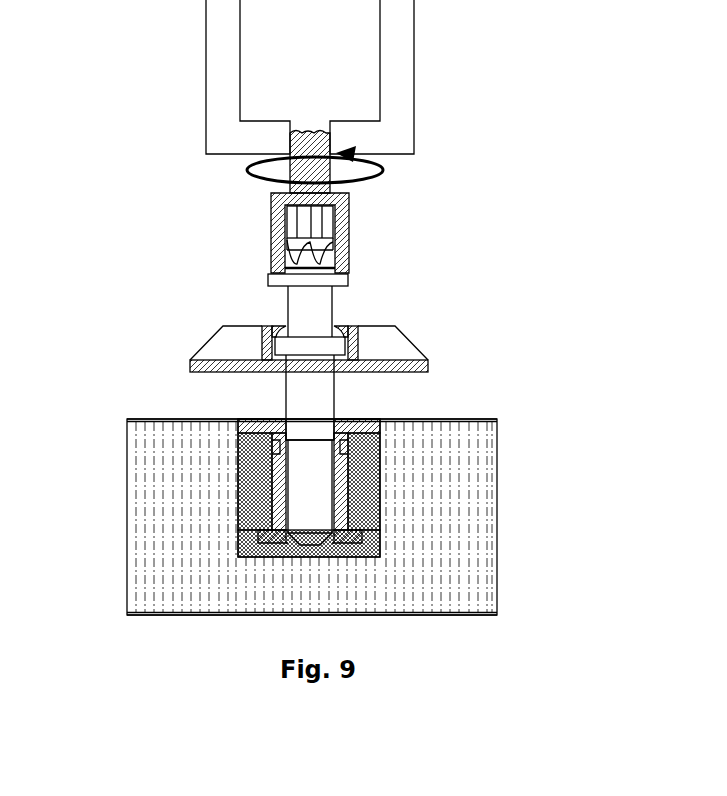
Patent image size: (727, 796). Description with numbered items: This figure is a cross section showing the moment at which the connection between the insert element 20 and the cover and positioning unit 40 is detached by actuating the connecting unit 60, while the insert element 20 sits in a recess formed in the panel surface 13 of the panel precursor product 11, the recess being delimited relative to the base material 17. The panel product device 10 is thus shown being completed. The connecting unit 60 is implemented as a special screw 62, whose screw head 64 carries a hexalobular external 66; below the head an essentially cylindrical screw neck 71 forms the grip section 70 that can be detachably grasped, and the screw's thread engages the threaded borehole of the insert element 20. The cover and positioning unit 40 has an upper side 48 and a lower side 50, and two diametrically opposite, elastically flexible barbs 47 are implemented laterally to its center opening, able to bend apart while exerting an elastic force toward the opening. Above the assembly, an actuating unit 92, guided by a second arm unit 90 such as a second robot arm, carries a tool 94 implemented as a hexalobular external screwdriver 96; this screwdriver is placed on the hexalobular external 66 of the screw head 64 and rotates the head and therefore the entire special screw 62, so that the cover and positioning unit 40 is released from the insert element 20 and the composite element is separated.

The substrate 10 is at (500, 498).
The panel precursor product 11 is at (467, 616).
The panel surface 13 is at (472, 418).
The base material 17 is at (445, 528).
The insert element 20 is at (272, 498).
The cover and positioning unit 40 is at (350, 354).
The barbs 47 is at (262, 336).
The upper side 48 is at (390, 327).
The lower side 50 is at (400, 369).
The connecting unit 60 is at (350, 348).
The special screw 62 is at (334, 308).
The screw head 64 is at (290, 262).
The hexalobular external 66 is at (292, 214).
The grip section 70 is at (321, 318).
The screw neck 71 is at (288, 293).
The second arm unit 90 is at (382, 146).
The actuating unit 92 is at (352, 153).
The tool 94 is at (330, 229).
The hexalobular external screwdriver 96 is at (313, 247).